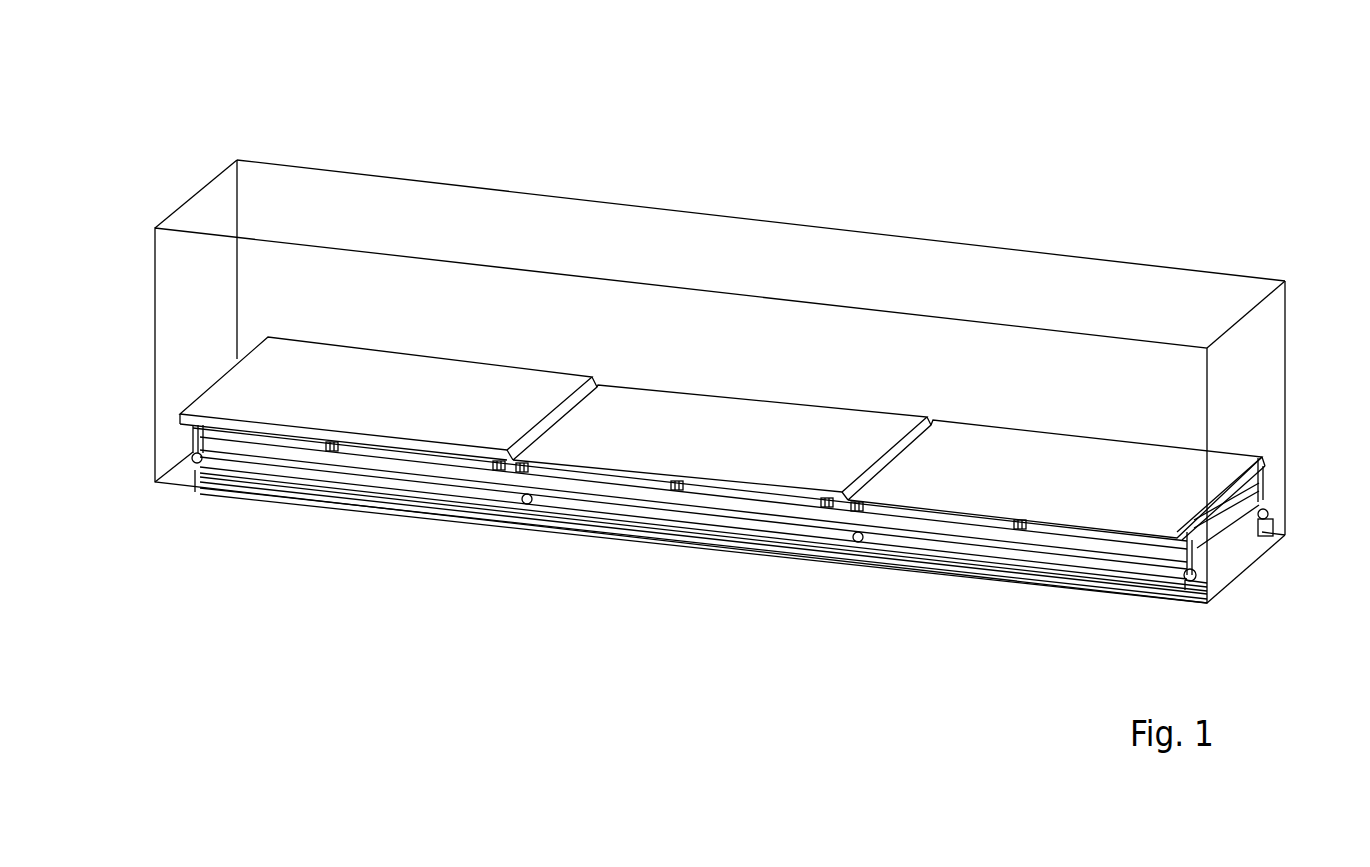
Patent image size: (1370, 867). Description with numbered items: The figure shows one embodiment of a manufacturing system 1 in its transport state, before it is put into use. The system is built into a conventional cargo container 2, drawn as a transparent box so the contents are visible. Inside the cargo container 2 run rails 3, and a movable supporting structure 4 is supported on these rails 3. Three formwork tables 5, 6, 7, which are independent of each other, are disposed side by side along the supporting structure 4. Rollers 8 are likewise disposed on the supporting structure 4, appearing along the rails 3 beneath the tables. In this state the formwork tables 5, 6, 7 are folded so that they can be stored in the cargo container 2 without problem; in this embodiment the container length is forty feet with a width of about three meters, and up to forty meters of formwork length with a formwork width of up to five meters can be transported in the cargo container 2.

The manufacturing system 1 is at (1013, 160).
The cargo container 2 is at (723, 215).
The rails 3 is at (573, 512).
The supporting structure 4 is at (1262, 500).
The formwork table 5 is at (300, 417).
The formwork table 6 is at (665, 467).
The formwork table 7 is at (953, 497).
The rollers 8 is at (860, 542).